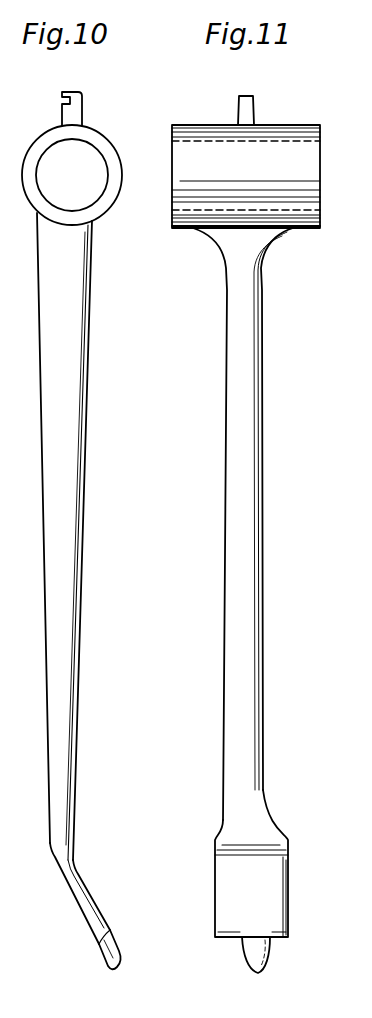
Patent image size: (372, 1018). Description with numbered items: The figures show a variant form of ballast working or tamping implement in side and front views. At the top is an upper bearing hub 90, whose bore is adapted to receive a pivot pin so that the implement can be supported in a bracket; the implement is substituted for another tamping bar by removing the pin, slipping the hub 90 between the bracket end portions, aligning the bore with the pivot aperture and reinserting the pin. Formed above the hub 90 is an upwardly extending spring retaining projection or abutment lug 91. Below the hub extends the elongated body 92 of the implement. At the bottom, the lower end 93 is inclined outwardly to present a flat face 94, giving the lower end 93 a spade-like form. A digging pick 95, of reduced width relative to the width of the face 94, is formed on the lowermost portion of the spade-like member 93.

In FIG. 10, the upper hub 90 is at (100, 203).
In FIG. 11, the upper hub 90 is at (208, 196).
In FIG. 10, the spring retaining projection or abutment lug 91 is at (81, 108).
In FIG. 11, the spring retaining projection or abutment lug 91 is at (254, 101).
In FIG. 10, the elongated body 92 is at (77, 498).
In FIG. 11, the elongated body 92 is at (256, 491).
In FIG. 10, the lower end 93 is at (83, 883).
In FIG. 11, the lower end 93 is at (214, 886).
In FIG. 11, the flat face 94 is at (263, 889).
In FIG. 10, the digging pick 95 is at (118, 947).
In FIG. 11, the digging pick 95 is at (270, 958).